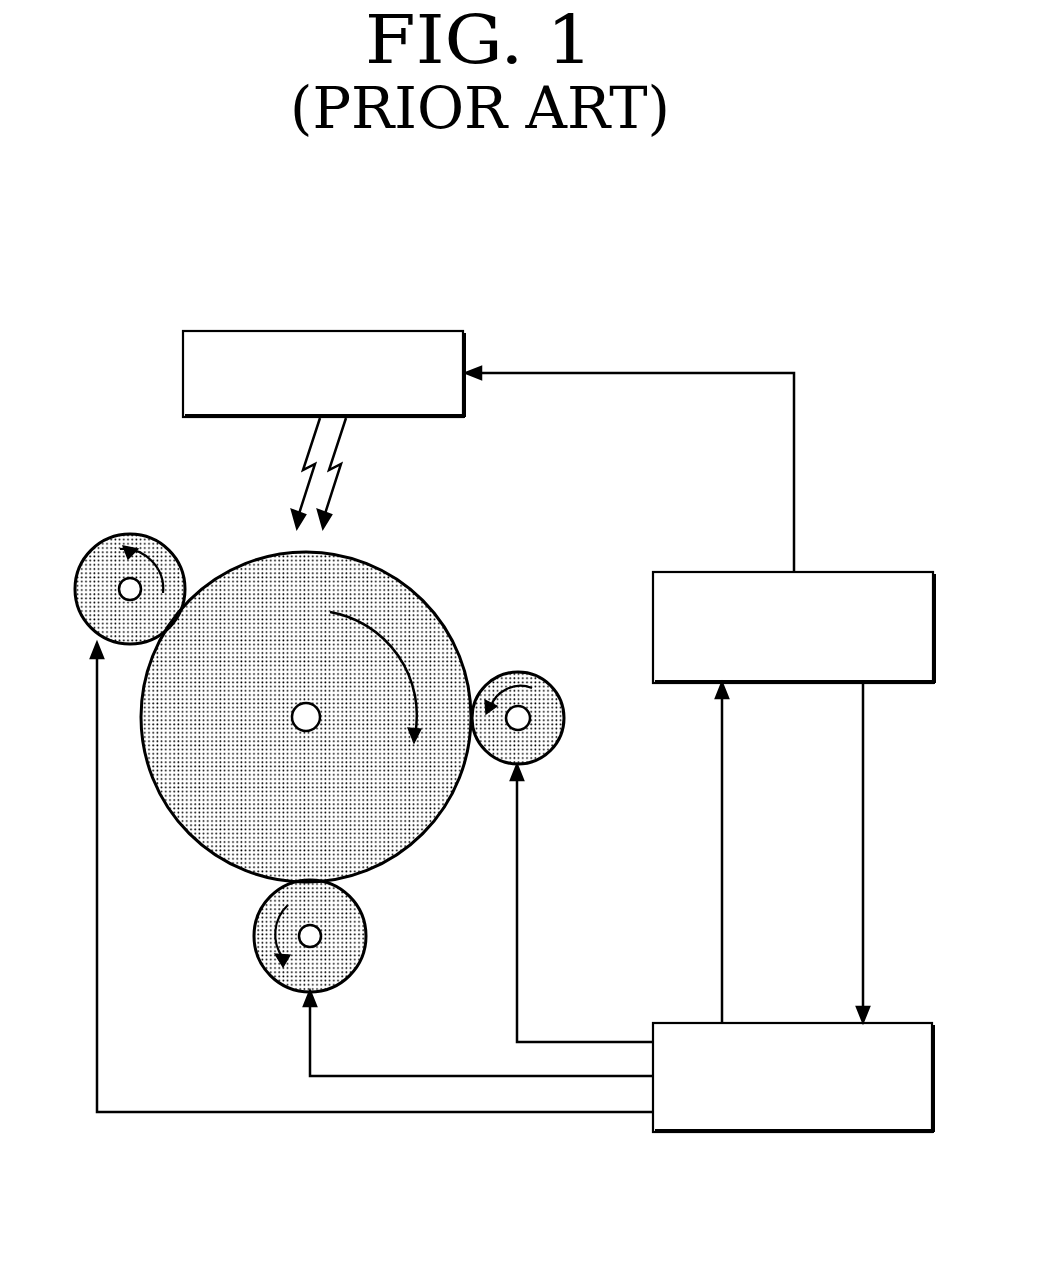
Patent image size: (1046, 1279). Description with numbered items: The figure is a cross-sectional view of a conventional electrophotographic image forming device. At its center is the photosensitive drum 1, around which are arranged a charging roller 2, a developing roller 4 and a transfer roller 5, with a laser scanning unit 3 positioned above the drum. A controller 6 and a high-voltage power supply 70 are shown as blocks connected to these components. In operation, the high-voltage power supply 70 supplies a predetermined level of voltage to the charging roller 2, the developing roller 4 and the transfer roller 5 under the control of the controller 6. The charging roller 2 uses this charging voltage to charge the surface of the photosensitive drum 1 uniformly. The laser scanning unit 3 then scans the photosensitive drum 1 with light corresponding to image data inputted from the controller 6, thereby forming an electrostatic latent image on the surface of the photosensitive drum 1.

The photosensitive drum 1 is at (386, 574).
The charging roller 2 is at (130, 534).
The laser scanning unit 3 is at (322, 330).
The developing roller 4 is at (518, 672).
The transfer roller 5 is at (368, 936).
The controller 6 is at (885, 571).
The high-voltage power supply 70 is at (906, 1022).